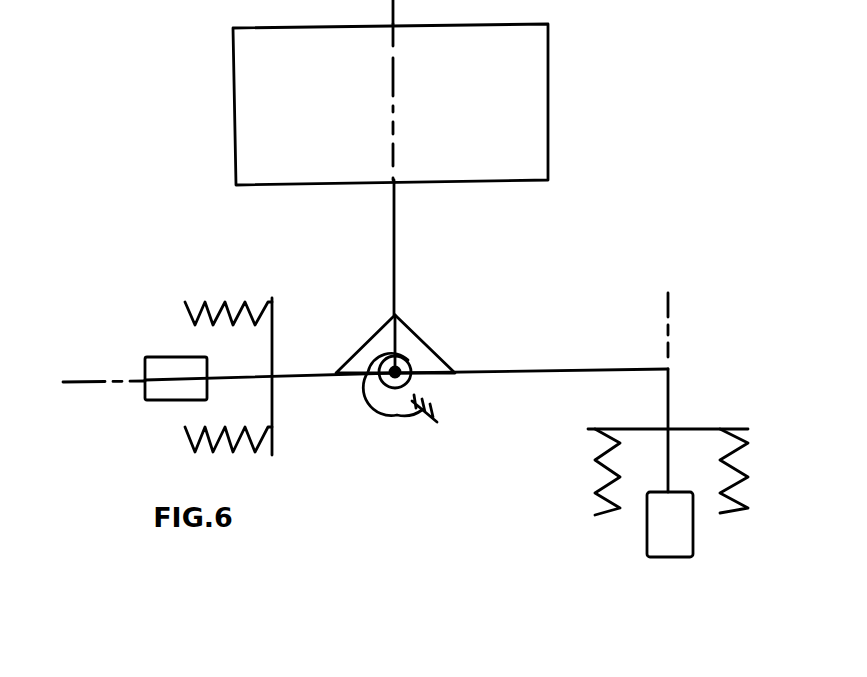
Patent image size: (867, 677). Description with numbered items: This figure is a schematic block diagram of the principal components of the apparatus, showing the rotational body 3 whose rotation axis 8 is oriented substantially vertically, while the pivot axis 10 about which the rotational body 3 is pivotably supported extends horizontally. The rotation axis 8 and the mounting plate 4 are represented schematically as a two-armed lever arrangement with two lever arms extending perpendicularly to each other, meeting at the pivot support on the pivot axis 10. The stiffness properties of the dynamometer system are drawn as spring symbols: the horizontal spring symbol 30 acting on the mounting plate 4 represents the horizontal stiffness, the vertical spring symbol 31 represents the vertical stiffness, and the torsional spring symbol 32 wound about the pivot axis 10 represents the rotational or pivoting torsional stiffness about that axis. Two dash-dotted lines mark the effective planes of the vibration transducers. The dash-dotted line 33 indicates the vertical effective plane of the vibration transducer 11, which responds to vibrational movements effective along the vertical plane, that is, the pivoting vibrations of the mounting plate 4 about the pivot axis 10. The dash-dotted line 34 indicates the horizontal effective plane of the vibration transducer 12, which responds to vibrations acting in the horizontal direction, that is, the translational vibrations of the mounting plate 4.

The rotational body 3 is at (535, 98).
The rotation axis 8 is at (393, 162).
The pivot axis 10 is at (409, 362).
The torsional spring symbol 32 is at (378, 410).
The mounting plate 4 is at (570, 367).
The dash-dotted line 34 is at (75, 381).
The vibration transducer 12 is at (177, 392).
The horizontal spring symbol 30 is at (224, 305).
The dash-dotted line 33 is at (670, 321).
The vertical spring symbol 31 is at (600, 470).
The vibration transducer 11 is at (660, 533).